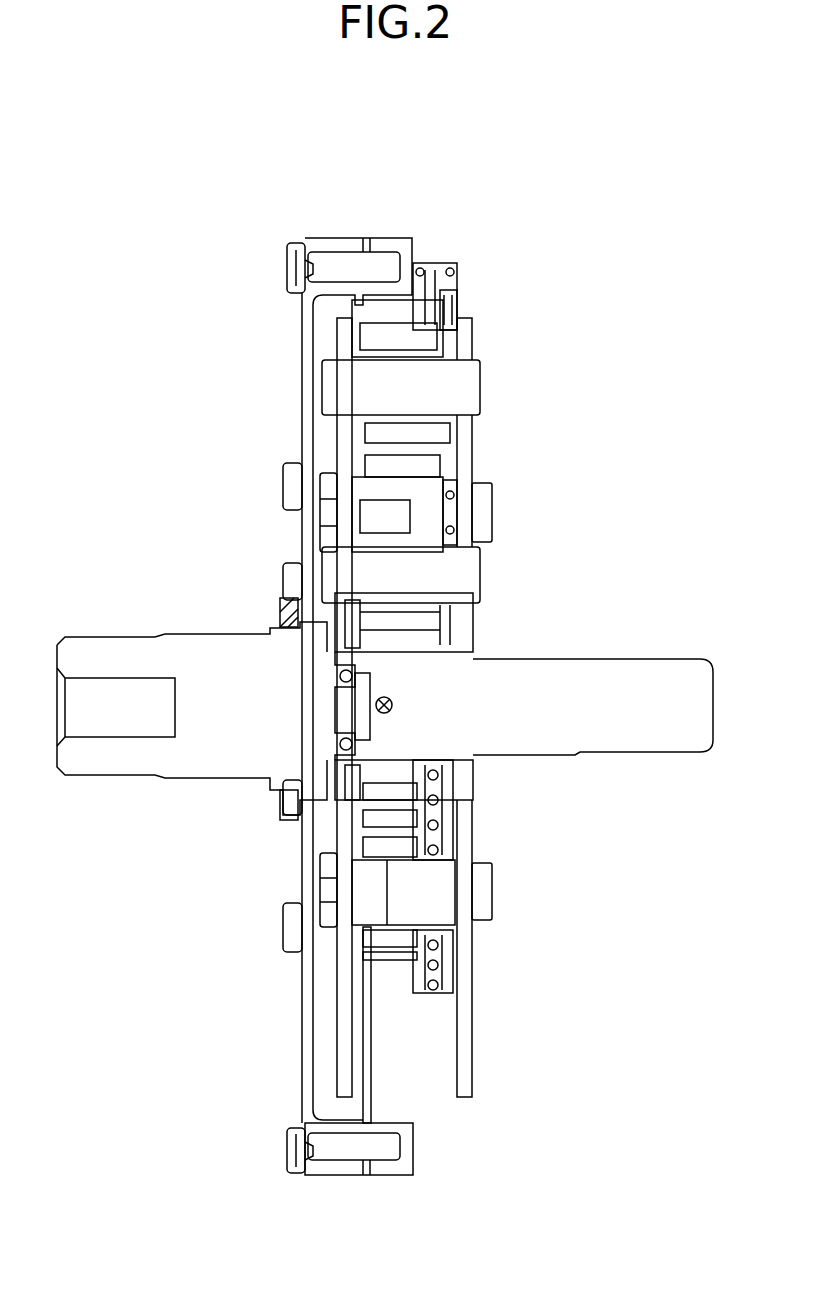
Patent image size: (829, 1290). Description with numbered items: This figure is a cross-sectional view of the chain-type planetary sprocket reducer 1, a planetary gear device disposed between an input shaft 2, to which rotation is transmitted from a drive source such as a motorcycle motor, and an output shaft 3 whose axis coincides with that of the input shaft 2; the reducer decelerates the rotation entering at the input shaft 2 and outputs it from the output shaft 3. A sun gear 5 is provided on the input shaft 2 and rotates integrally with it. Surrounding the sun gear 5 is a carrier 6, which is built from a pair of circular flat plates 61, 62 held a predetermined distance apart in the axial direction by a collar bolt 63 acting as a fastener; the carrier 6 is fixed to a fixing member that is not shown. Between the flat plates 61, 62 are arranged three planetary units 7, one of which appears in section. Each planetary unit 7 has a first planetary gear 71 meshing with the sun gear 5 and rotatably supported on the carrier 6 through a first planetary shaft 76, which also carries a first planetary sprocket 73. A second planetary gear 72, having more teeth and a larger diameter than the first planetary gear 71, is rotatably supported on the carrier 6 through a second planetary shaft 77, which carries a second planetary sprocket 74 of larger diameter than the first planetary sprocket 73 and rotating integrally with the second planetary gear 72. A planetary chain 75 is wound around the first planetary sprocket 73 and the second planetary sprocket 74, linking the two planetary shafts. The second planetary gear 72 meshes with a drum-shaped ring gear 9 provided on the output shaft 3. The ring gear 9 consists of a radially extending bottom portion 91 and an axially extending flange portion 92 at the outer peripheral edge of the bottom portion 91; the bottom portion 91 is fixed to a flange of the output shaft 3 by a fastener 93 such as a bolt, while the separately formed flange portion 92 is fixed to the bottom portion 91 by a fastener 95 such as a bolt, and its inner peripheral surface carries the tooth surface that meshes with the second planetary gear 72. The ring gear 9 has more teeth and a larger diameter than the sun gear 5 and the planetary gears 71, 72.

The chain-type planetary sprocket reducer 1 is at (402, 182).
The input shaft 2 is at (645, 670).
The output shaft 3 is at (138, 660).
The sun gear 5 is at (425, 640).
The carrier 6 is at (394, 720).
The planetary unit 7 is at (468, 248).
The ring gear 9 is at (278, 238).
The circular flat plate 61 is at (470, 1075).
The circular flat plate 62 is at (340, 1060).
The collar bolt 63 is at (320, 886).
The first planetary gear 71 is at (370, 508).
The second planetary gear 72 is at (372, 308).
The first planetary sprocket 73 is at (452, 517).
The second planetary sprocket 74 is at (455, 300).
The planetary chain 75 is at (428, 262).
The first planetary shaft 76 is at (470, 572).
The second planetary shaft 77 is at (470, 385).
The bottom portion 91 is at (305, 428).
The flange portion 92 is at (392, 240).
The fastener 93 is at (275, 605).
The fastener 95 is at (298, 268).